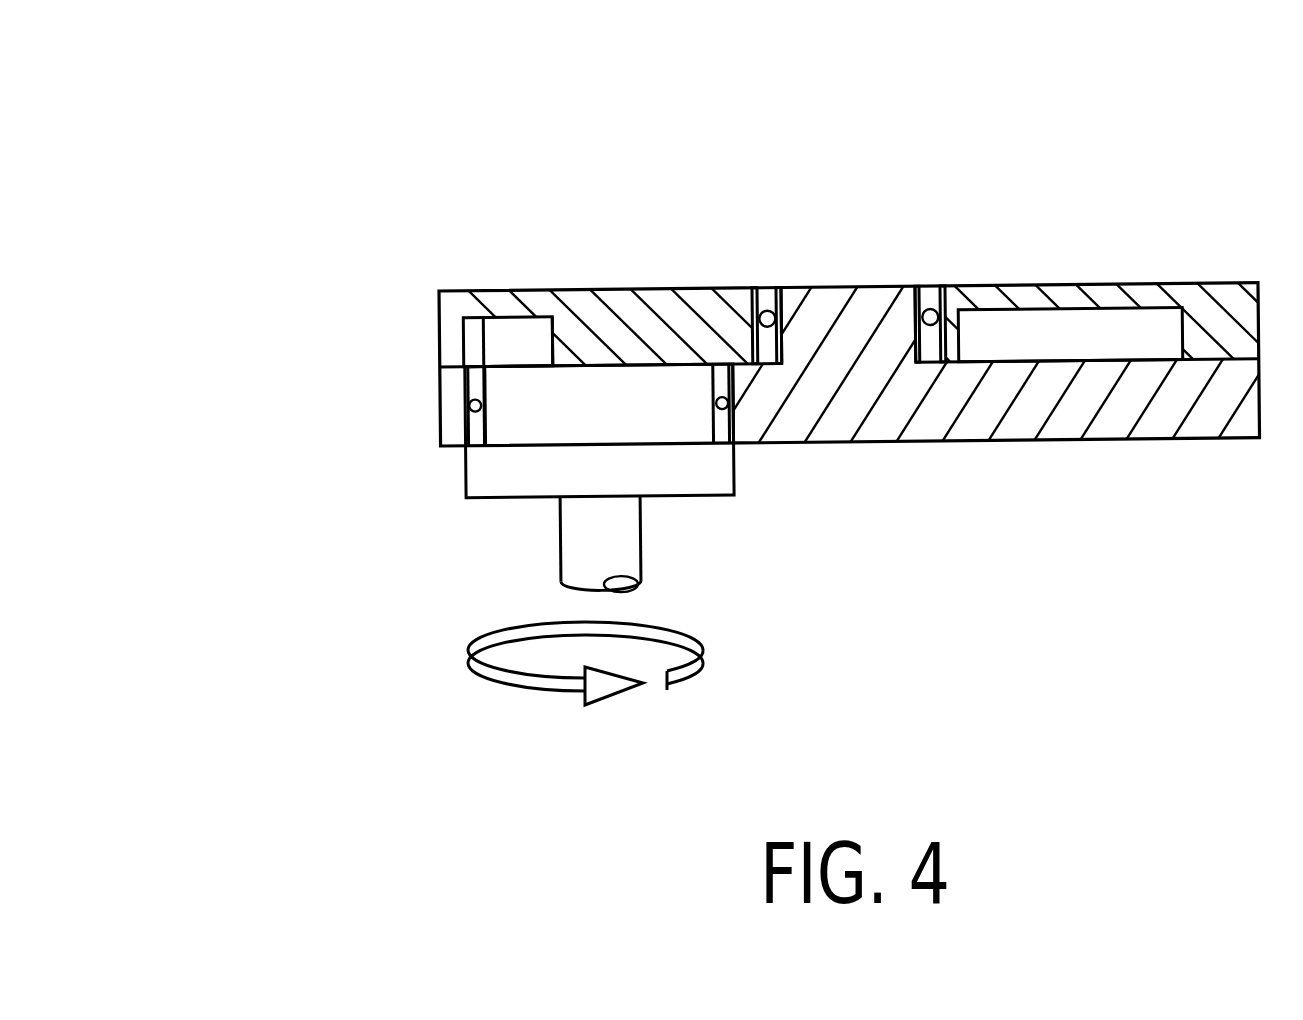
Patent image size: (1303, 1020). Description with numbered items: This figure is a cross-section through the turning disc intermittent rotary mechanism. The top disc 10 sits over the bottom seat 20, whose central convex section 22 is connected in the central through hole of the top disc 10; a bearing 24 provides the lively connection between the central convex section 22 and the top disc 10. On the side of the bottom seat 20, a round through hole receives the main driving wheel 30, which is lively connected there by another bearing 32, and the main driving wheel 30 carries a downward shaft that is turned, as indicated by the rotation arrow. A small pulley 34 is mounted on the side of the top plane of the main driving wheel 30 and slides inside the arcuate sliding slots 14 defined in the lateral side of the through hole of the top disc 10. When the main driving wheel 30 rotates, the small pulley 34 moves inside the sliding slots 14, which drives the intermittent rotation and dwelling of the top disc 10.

The top disc 10 is at (645, 328).
The sliding slots 14 is at (1073, 343).
The bottom seat 20 is at (1040, 412).
The central convex section 22 is at (852, 318).
The bearing 24 is at (768, 308).
The main driving wheel 30 is at (565, 460).
The bearing 32 is at (472, 422).
The small pulley 34 is at (513, 343).